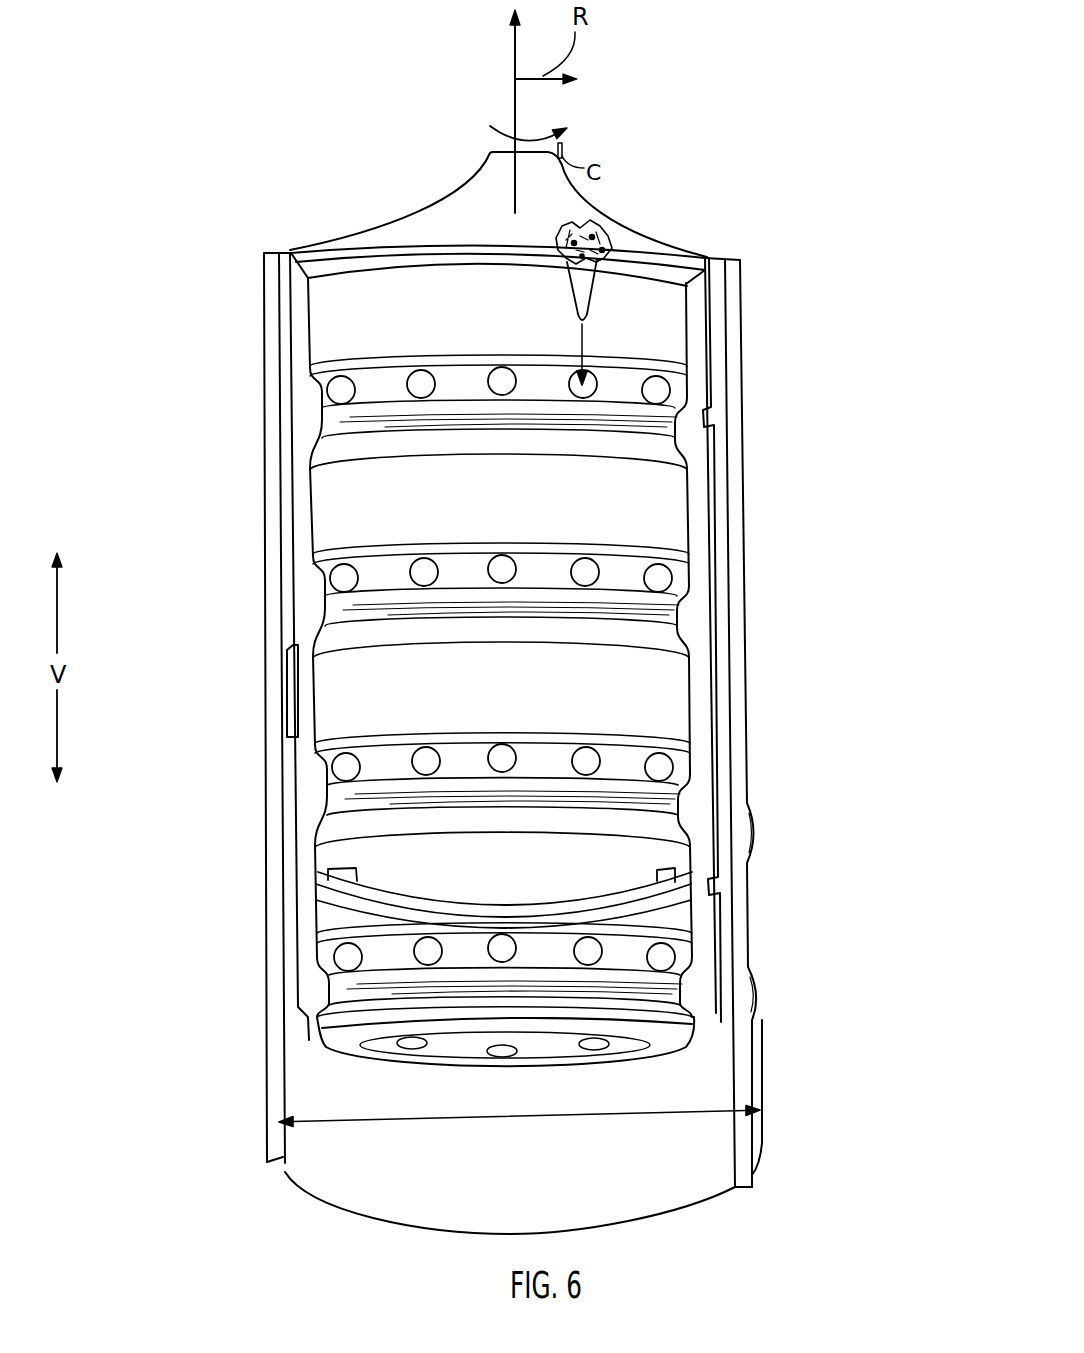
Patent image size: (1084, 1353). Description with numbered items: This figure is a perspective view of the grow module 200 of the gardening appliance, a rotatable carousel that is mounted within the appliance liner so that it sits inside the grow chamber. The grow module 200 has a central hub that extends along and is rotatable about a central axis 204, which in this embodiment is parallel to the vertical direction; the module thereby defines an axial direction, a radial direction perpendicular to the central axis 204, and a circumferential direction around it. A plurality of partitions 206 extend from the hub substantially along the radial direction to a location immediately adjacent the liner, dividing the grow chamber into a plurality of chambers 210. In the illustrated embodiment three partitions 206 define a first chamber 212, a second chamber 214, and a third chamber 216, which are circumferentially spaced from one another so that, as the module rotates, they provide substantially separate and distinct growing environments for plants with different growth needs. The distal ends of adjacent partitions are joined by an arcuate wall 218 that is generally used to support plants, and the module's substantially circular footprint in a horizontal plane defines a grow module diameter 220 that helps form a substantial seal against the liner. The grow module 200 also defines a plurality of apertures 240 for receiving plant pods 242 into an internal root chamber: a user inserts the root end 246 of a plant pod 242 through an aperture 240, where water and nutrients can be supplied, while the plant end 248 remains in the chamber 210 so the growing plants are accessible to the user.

The grow module 200 is at (886, 110).
The central axis 204 is at (515, 53).
The partitions 206 is at (325, 236).
The chambers 210 is at (663, 695).
The first chamber 212 is at (665, 194).
The second chamber 214 is at (395, 190).
The third chamber 216 is at (386, 481).
The arcuate wall 218 is at (663, 513).
The grow module diameter 220 is at (620, 1115).
The apertures 240 is at (316, 408).
The plant pods 242 is at (585, 283).
The root end 246 is at (558, 318).
The plant end 248 is at (547, 249).